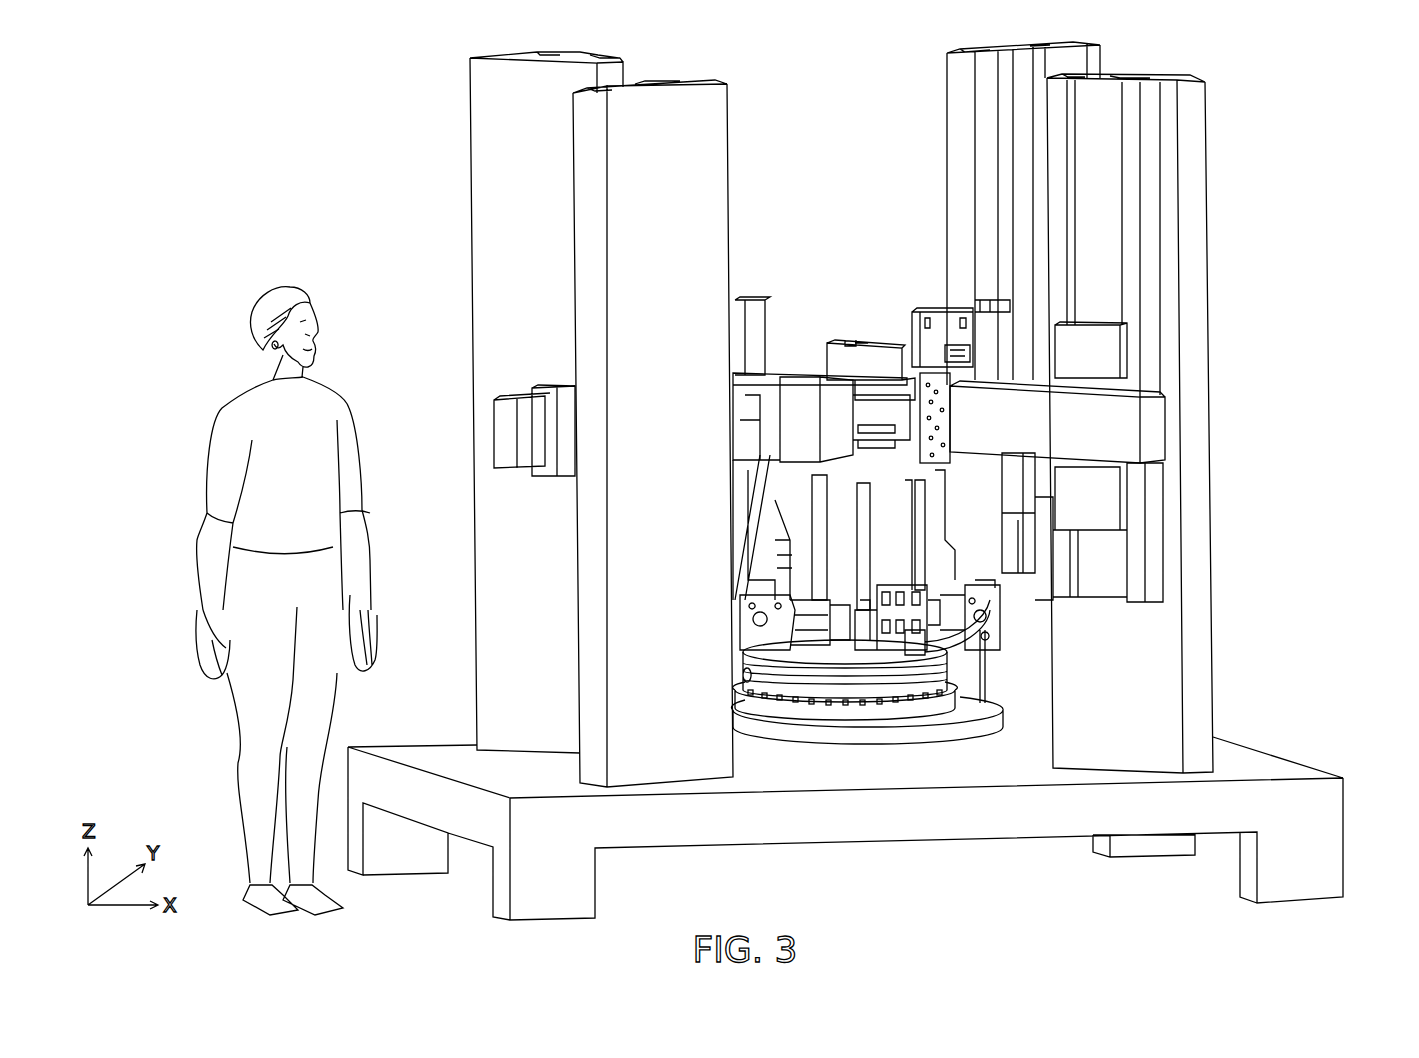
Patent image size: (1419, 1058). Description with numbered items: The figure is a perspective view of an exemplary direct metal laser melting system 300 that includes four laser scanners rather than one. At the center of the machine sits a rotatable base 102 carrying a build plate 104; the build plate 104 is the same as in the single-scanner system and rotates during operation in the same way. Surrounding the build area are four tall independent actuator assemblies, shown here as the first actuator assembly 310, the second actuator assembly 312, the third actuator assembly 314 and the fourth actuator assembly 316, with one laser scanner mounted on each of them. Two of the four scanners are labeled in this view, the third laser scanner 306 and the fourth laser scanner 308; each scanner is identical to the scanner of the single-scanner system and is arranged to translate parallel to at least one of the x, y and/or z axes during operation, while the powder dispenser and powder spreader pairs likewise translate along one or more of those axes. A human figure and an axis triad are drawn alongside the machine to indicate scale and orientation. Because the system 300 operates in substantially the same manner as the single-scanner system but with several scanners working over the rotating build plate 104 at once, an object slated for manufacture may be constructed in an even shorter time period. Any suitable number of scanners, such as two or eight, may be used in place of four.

The DMLM system 300 is at (1315, 92).
The rotatable base 102 is at (1000, 708).
The build plate 104 is at (875, 703).
The third laser scanner 306 is at (835, 397).
The fourth laser scanner 308 is at (760, 405).
The first actuator assembly 310 is at (470, 150).
The second actuator assembly 312 is at (947, 102).
The third actuator assembly 314 is at (1213, 428).
The fourth actuator assembly 316 is at (700, 737).